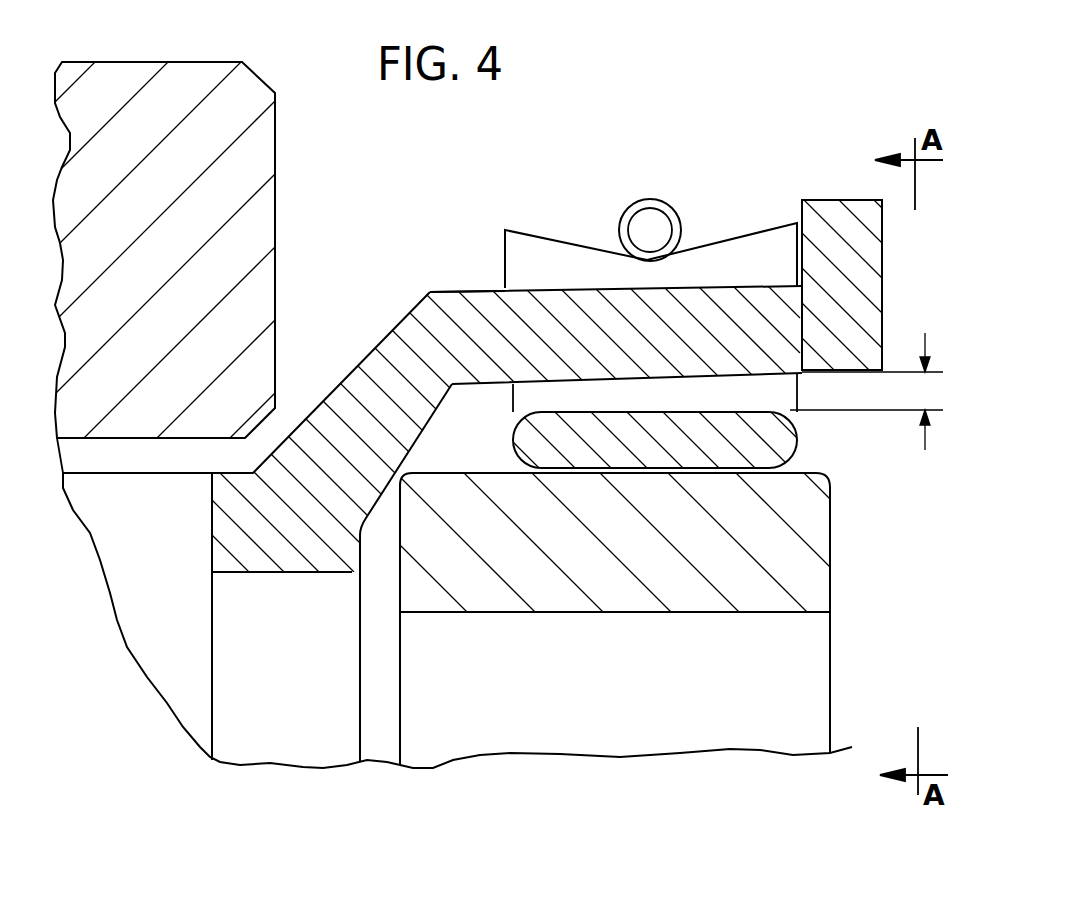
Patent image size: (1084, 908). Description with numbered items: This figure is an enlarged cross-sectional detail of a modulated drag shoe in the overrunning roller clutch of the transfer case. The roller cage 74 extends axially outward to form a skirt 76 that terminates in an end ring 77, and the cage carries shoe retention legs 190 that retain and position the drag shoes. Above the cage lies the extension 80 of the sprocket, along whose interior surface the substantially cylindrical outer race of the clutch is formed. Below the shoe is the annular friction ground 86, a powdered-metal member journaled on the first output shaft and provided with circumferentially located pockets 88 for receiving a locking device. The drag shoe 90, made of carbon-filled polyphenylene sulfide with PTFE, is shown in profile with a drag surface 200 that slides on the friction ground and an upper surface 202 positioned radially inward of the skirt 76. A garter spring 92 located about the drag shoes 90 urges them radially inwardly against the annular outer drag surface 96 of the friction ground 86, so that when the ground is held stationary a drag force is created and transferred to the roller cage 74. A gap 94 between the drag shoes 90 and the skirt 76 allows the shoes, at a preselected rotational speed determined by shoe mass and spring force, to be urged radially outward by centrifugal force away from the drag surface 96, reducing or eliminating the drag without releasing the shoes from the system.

The roller cage 74 is at (358, 365).
The skirt 76 is at (414, 306).
The end ring 77 is at (828, 200).
The extension 80 is at (276, 143).
The friction ground 86 is at (832, 520).
The pockets 88 is at (785, 660).
The drag shoes 90 is at (527, 230).
The garter spring 92 is at (654, 201).
The gap 94 is at (866, 391).
The drag surface 96 is at (803, 458).
The shoe retention legs 190 is at (479, 291).
The drag surface 200 is at (583, 470).
The upper surface 202 is at (602, 410).